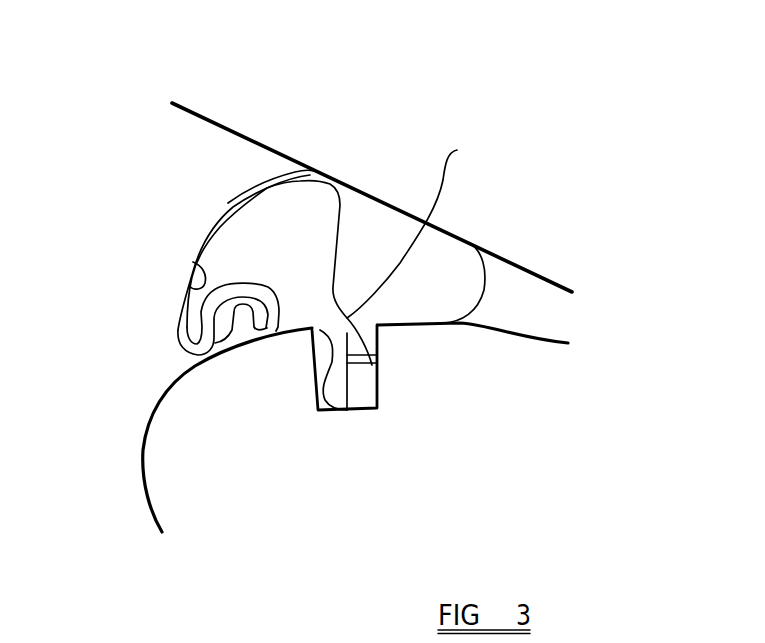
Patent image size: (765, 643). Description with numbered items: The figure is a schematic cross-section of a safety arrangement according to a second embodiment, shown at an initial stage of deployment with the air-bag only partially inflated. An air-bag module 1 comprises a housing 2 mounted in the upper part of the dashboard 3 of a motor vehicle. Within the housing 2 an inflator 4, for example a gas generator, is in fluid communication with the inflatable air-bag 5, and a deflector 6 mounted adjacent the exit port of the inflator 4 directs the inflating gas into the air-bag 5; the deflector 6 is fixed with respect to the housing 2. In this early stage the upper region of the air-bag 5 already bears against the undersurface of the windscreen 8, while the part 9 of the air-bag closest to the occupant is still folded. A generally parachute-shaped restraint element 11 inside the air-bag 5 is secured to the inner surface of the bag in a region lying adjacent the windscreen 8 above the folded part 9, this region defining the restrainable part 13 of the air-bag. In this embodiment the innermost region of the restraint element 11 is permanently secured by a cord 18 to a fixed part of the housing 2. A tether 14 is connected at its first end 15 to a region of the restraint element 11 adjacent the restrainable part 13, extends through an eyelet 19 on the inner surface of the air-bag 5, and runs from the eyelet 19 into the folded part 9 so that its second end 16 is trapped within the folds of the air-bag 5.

The air-bag module 1 is at (344, 430).
The housing 2 is at (318, 410).
The dashboard 3 is at (180, 428).
The inflator 4 is at (378, 392).
The air-bag 5 is at (490, 297).
The deflector 6 is at (378, 354).
The windscreen 8 is at (513, 263).
The folded part 9 is at (180, 343).
The restraint element 11 is at (320, 223).
The restrainable part 13 is at (228, 203).
The tether 14 is at (187, 313).
The first end 15 is at (216, 236).
The second end 16 is at (268, 323).
The cord 18 is at (457, 150).
The eyelet 19 is at (192, 282).